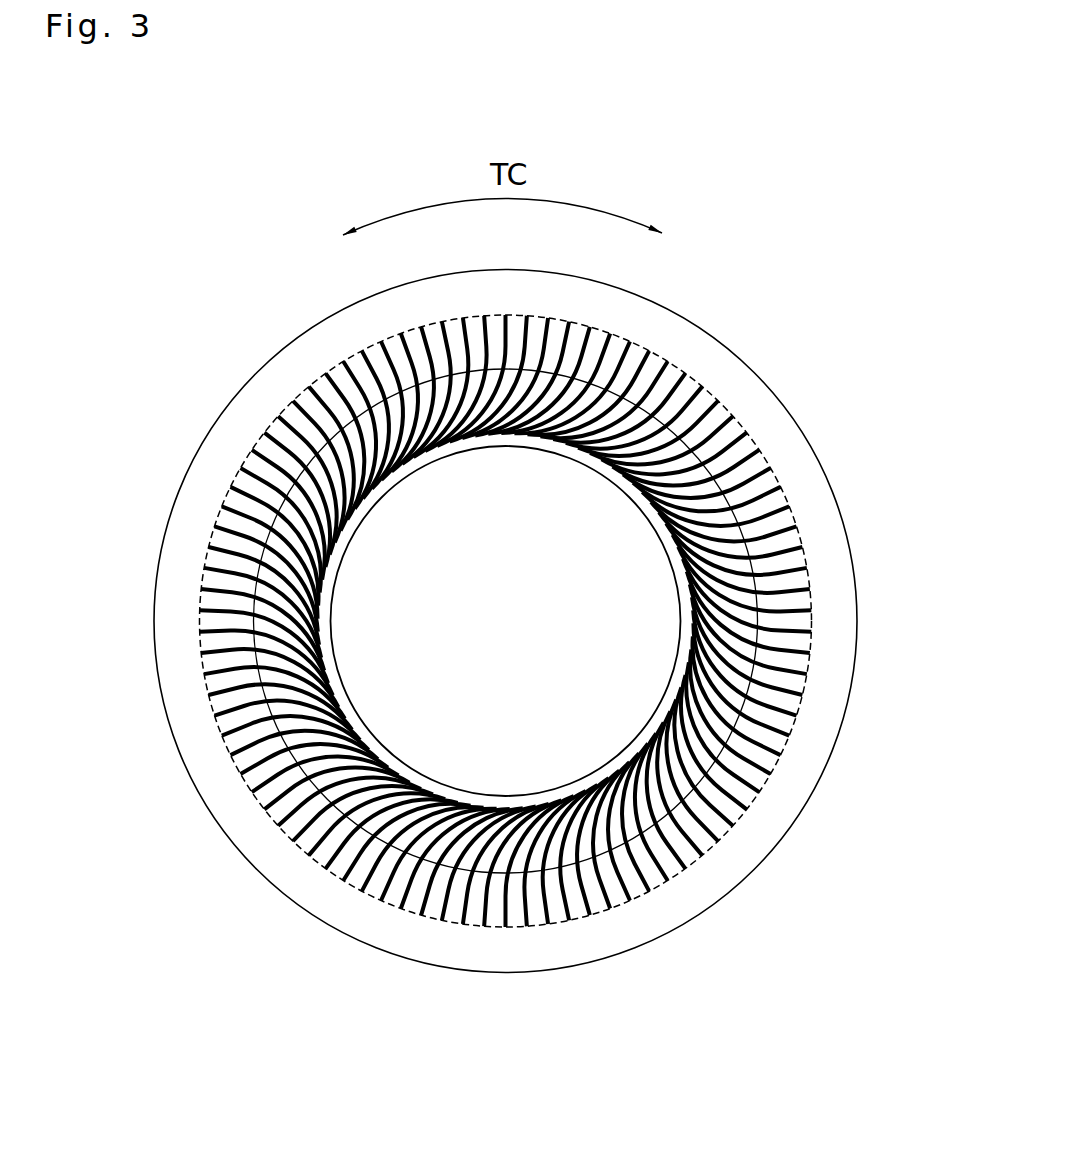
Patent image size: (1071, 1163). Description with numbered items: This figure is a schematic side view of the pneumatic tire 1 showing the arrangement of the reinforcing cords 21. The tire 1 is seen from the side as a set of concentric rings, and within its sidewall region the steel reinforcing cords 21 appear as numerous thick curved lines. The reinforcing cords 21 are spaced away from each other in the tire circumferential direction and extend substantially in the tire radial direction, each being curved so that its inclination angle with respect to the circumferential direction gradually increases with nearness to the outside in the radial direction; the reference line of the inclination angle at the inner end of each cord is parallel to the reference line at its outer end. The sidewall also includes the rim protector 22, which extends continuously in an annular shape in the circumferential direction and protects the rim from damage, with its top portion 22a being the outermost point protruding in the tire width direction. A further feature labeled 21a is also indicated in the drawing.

The pneumatic tire 1 is at (773, 300).
The reinforcing cords 21 is at (746, 458).
The inner peripheral surface of outer ring portion 21a is at (770, 474).
The rim protector 22 is at (320, 445).
The top portion 22a is at (454, 621).